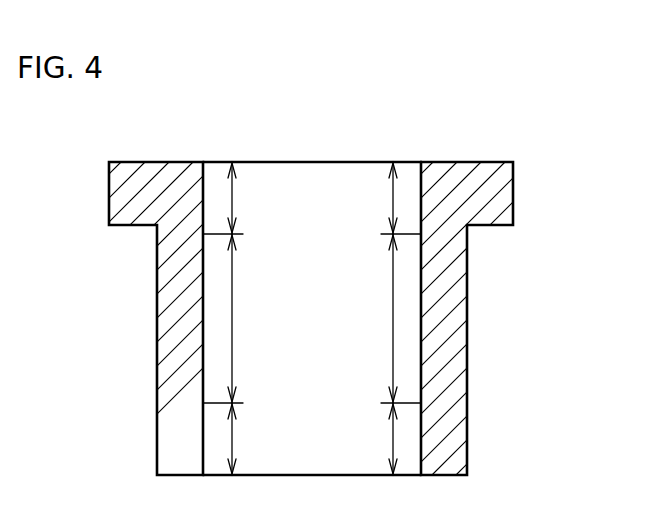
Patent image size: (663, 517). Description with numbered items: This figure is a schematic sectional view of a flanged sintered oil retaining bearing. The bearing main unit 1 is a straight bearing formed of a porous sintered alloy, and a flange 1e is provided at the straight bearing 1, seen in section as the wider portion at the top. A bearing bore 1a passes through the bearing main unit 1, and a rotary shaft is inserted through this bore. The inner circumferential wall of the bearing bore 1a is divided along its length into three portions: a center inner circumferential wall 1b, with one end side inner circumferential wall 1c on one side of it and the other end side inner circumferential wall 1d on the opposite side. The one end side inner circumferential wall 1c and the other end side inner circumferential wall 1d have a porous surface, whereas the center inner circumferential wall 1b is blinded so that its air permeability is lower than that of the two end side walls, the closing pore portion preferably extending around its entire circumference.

The bearing main unit 1 is at (457, 320).
The bearing bore 1a is at (308, 177).
The center inner circumferential wall 1b is at (312, 318).
The one end side inner circumferential wall 1c is at (312, 198).
The other end side inner circumferential wall 1d is at (312, 439).
The flange 1e is at (502, 199).